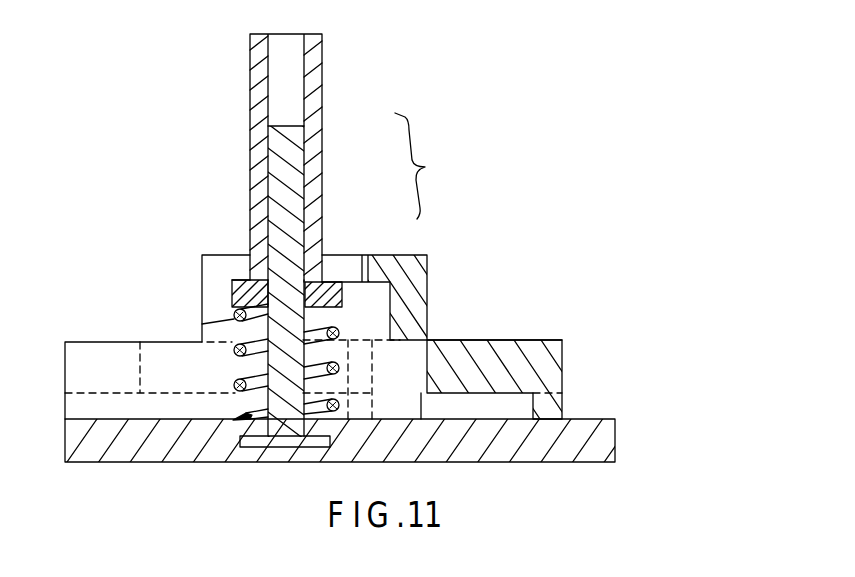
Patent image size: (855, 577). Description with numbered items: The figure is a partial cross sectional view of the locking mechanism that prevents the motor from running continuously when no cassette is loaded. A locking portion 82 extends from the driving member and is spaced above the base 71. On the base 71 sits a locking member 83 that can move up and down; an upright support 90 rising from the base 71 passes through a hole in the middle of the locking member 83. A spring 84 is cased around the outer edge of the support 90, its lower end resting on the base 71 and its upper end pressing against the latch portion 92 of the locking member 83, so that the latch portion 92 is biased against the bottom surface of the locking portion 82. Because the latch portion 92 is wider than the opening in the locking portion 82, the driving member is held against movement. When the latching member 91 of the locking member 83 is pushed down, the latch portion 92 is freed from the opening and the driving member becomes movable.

The base 71 is at (593, 419).
The locking portion 82 is at (497, 340).
The locking member 83 is at (426, 166).
The spring 84 is at (234, 353).
The upright support 90 is at (288, 126).
The latching member 91 is at (317, 48).
The latch portion 92 is at (232, 297).